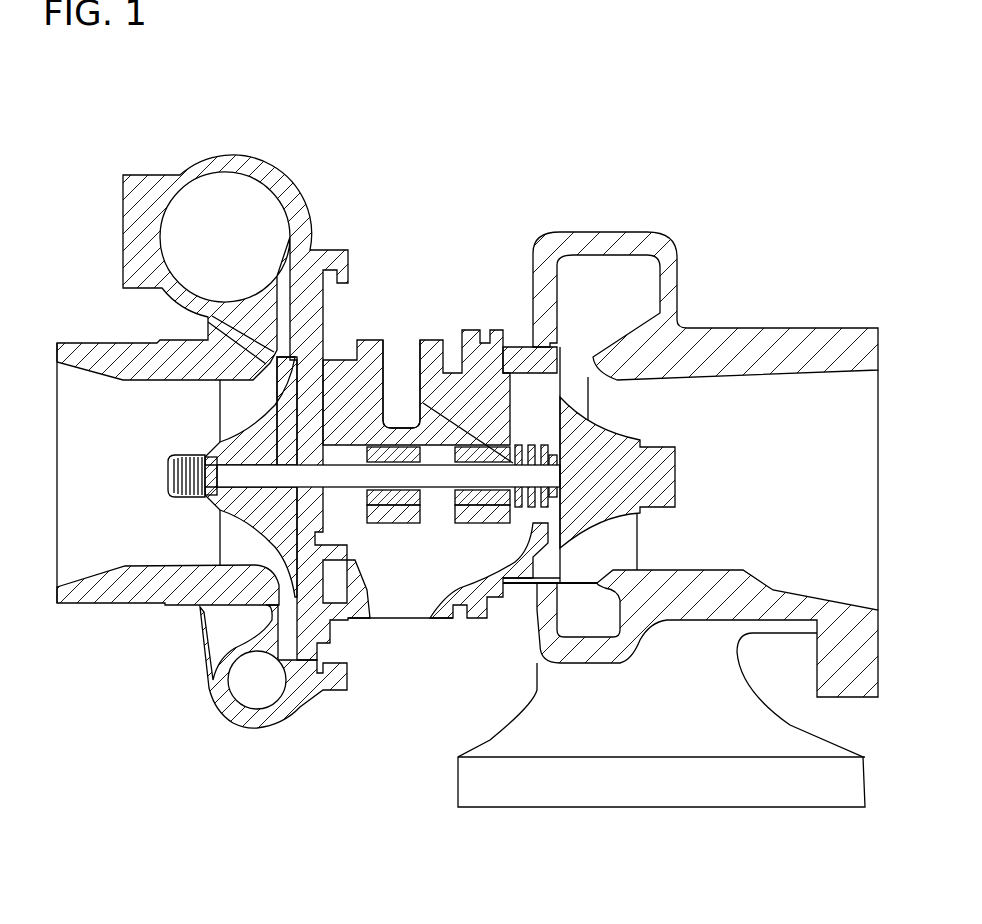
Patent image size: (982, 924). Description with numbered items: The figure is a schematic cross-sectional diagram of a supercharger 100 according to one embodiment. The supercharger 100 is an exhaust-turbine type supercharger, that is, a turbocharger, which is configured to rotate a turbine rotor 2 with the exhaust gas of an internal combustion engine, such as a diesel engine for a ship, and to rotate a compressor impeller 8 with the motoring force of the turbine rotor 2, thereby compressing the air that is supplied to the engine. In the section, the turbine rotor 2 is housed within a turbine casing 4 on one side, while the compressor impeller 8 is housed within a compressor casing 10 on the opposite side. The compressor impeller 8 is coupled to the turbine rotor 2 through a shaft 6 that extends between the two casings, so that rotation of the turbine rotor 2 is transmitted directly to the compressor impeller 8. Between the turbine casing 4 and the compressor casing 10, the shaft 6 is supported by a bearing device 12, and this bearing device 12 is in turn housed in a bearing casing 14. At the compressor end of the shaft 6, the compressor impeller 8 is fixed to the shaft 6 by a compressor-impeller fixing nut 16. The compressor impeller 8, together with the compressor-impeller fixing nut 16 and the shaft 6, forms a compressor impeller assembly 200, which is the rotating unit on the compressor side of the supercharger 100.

The supercharger 100 is at (553, 122).
The turbine rotor 2 is at (653, 463).
The turbine casing 4 is at (792, 347).
The shaft 6 is at (333, 497).
The compressor impeller 8 is at (268, 432).
The compressor casing 10 is at (92, 345).
The bearing device 12 is at (443, 530).
The bearing casing 14 is at (437, 340).
The compressor-impeller fixing nut 16 is at (178, 492).
The compressor impeller assembly 200 is at (148, 480).